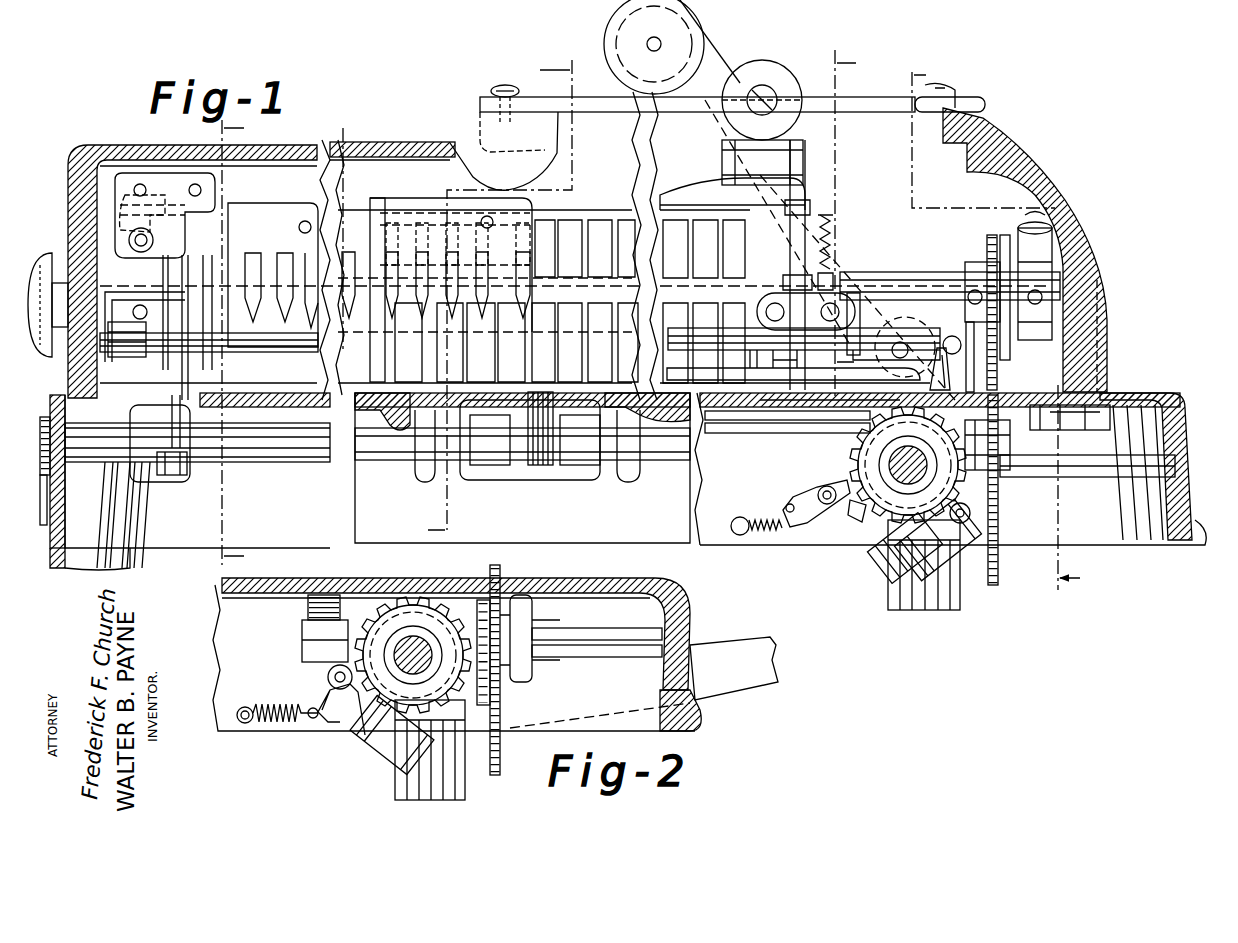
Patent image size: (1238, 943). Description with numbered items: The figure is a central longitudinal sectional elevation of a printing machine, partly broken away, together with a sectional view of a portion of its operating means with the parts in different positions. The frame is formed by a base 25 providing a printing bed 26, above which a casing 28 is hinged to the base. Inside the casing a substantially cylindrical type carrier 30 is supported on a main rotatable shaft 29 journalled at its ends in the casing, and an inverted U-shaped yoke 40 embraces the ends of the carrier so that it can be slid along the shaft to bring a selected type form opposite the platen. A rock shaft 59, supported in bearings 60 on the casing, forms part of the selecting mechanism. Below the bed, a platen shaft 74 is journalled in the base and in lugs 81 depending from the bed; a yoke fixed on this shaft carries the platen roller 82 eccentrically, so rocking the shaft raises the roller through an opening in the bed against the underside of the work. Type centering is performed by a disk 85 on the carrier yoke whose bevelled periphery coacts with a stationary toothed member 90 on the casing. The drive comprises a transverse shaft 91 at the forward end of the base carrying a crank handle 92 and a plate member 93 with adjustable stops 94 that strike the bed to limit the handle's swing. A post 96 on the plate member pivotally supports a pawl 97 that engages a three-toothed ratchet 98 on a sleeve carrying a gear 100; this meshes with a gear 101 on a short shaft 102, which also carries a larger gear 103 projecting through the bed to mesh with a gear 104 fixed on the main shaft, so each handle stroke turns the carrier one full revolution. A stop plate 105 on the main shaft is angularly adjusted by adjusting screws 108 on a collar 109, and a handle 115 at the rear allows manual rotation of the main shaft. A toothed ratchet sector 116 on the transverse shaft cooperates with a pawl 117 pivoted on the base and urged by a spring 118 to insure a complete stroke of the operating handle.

In FIG. 1, the base 25 is at (1170, 392).
In FIG. 1, the printing bed 26 is at (772, 405).
In FIG. 1, the casing 28 is at (1095, 240).
In FIG. 1, the main rotatable shaft 29 is at (920, 292).
In FIG. 1, the type carrier 30 is at (716, 205).
In FIG. 1, the yoke 40 is at (418, 196).
In FIG. 1, the rock shaft 59 is at (152, 350).
In FIG. 1, the bearings 60 is at (838, 300).
In FIG. 1, the platen shaft 74 is at (272, 462).
In FIG. 1, the lugs 81 is at (424, 474).
In FIG. 1, the platen roller 82 is at (541, 470).
In FIG. 1, the disk 85 is at (305, 352).
In FIG. 1, the toothed member 90 is at (272, 235).
In FIG. 1, the shaft 91 is at (866, 470).
In FIG. 1, the crank handle 92 is at (730, 83).
In FIG. 1, the plate member 93 is at (872, 538).
In FIG. 2, the plate member 93 is at (382, 715).
In FIG. 1, the adjustable spaced stops 94 is at (958, 562).
In FIG. 2, the adjustable spaced stops 94 is at (310, 612).
In FIG. 1, the post 96 is at (966, 525).
In FIG. 1, the pawl 97 is at (896, 560).
In FIG. 1, the three-toothed ratchet 98 is at (858, 480).
In FIG. 1, the gear 100 is at (855, 445).
In FIG. 2, the gear 100 is at (455, 608).
In FIG. 1, the gear 101 is at (980, 470).
In FIG. 2, the gear 101 is at (483, 706).
In FIG. 2, the short shaft 102 is at (606, 640).
In FIG. 1, the larger gear 103 is at (1000, 560).
In FIG. 2, the larger gear 103 is at (500, 758).
In FIG. 1, the gear 104 is at (990, 238).
In FIG. 1, the stop plate 105 is at (1005, 236).
In FIG. 1, the adjusting screws 108 is at (1036, 220).
In FIG. 1, the collar 109 is at (1037, 342).
In FIG. 1, the handle 115 is at (48, 290).
In FIG. 1, the toothed ratchet sector 116 is at (858, 522).
In FIG. 1, the pawl 117 is at (805, 530).
In FIG. 1, the spring 118 is at (756, 533).